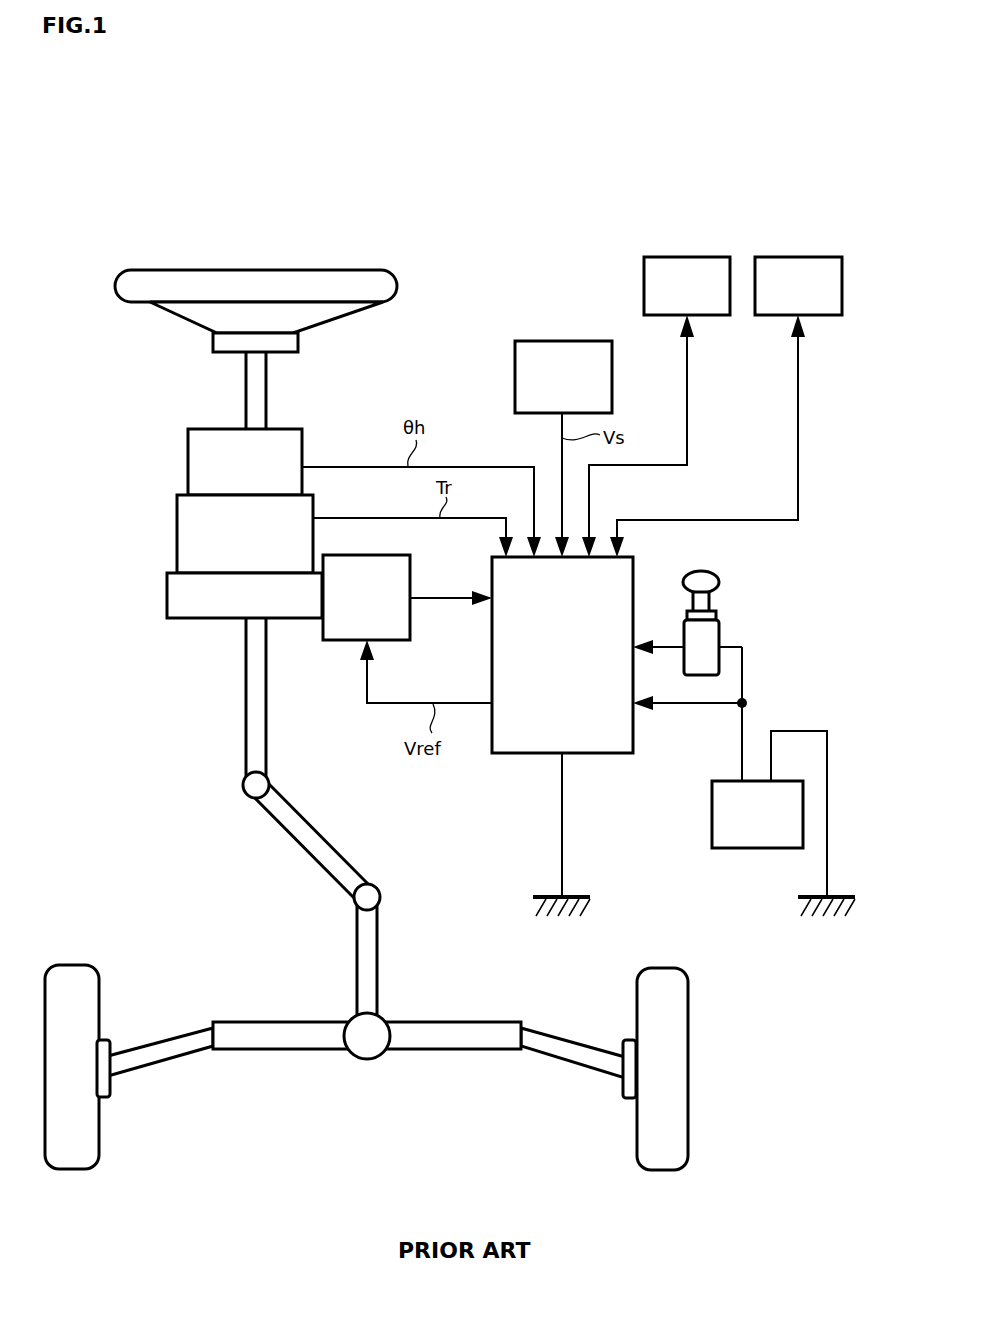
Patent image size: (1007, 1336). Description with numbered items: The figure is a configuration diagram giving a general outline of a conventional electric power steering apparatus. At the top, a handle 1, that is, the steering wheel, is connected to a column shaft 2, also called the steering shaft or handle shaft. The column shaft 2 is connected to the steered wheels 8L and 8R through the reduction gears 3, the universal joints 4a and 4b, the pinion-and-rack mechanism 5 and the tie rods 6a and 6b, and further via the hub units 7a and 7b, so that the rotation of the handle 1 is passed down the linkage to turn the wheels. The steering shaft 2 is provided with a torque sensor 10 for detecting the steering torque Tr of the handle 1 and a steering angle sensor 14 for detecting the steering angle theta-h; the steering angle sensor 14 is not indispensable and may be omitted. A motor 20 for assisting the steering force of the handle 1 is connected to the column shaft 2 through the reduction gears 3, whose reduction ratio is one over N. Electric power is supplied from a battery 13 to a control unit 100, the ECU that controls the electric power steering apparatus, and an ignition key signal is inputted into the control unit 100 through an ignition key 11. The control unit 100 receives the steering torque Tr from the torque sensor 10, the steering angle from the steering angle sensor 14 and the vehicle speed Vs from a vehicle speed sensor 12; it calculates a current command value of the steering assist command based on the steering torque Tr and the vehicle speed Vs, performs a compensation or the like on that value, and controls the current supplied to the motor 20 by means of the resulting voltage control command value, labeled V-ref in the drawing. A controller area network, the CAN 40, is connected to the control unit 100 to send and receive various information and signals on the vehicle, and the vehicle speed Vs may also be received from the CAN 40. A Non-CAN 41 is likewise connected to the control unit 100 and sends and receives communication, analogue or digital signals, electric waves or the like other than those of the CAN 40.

The handle (steering wheel) 1 is at (397, 282).
The column shaft 2 is at (246, 400).
The reduction gears 3 is at (167, 604).
The universal joint 4a is at (243, 794).
The universal joint 4b is at (353, 903).
The pinion-and-rack mechanism 5 is at (378, 1020).
The tie rod 6a is at (141, 1040).
The tie rod 6b is at (551, 1036).
The hub unit 7a is at (110, 1093).
The hub unit 7b is at (625, 1092).
The steered wheel 8L is at (99, 1162).
The steered wheel 8R is at (637, 1158).
The torque sensor 10 is at (177, 525).
The ignition key 11 is at (719, 582).
The vehicle speed sensor 12 is at (612, 358).
The battery 13 is at (712, 806).
The steering angle sensor 14 is at (188, 461).
The motor 20 is at (410, 566).
The controller area network (CAN) 40 is at (827, 257).
The Non-CAN 41 is at (716, 257).
The control unit (ECU) 100 is at (633, 564).